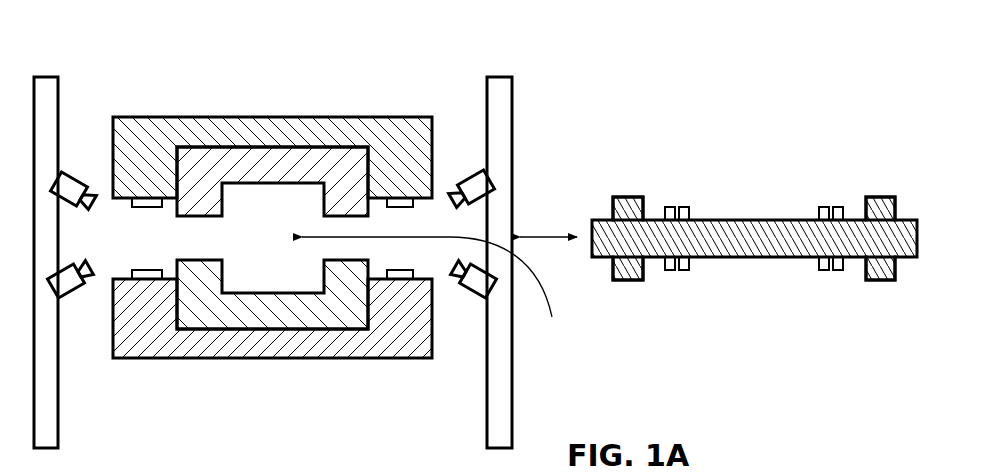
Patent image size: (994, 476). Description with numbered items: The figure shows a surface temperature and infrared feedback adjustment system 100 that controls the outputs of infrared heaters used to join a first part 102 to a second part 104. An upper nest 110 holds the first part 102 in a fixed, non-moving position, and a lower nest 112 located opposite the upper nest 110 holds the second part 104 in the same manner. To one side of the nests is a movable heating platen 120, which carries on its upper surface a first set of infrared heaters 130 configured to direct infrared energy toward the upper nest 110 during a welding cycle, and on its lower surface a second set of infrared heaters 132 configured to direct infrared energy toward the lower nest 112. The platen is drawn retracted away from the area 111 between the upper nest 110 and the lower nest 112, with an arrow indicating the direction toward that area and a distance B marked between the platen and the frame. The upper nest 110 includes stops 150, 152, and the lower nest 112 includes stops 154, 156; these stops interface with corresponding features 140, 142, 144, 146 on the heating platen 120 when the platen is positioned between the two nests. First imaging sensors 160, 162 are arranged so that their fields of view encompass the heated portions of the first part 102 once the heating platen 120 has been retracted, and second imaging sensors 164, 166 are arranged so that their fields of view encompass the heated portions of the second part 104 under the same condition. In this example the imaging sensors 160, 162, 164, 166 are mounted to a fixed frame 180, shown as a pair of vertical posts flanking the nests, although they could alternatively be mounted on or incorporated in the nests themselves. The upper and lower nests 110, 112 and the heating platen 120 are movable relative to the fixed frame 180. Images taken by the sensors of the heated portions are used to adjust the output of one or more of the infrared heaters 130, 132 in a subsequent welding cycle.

The surface temperature and infrared feedback adjustment system 100 is at (727, 34).
The first part 102 is at (296, 189).
The second part 104 is at (296, 287).
The upper nest 110 is at (248, 117).
The area 111 is at (436, 295).
The lower nest 112 is at (248, 358).
The movable heating platen 120 is at (758, 220).
The first set of infrared heaters 130 is at (678, 196).
The second set of infrared heaters 132 is at (678, 283).
The feature 140 is at (625, 197).
The feature 142 is at (884, 197).
The feature 144 is at (625, 280).
The feature 146 is at (884, 280).
The stop 150 is at (159, 214).
The stop 152 is at (384, 214).
The stop 154 is at (159, 262).
The stop 156 is at (384, 262).
The first imaging sensor 160 is at (74, 172).
The first imaging sensor 162 is at (470, 172).
The second imaging sensor 164 is at (75, 297).
The second imaging sensor 166 is at (470, 297).
The fixed frame 180 is at (58, 93).
The distance B is at (537, 232).